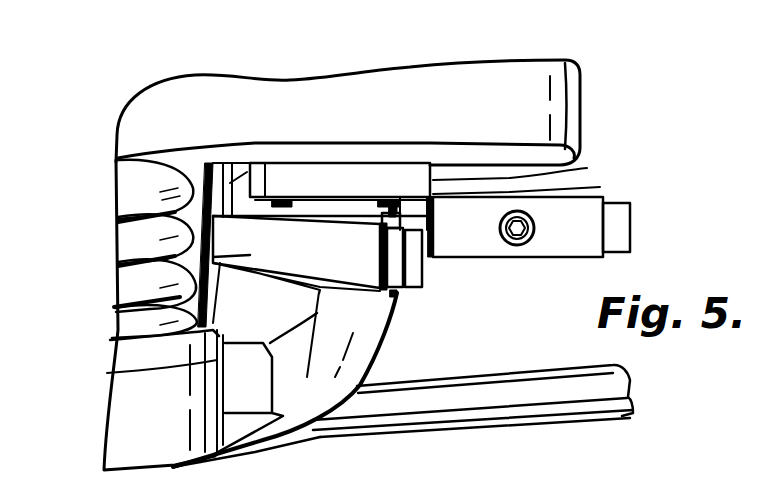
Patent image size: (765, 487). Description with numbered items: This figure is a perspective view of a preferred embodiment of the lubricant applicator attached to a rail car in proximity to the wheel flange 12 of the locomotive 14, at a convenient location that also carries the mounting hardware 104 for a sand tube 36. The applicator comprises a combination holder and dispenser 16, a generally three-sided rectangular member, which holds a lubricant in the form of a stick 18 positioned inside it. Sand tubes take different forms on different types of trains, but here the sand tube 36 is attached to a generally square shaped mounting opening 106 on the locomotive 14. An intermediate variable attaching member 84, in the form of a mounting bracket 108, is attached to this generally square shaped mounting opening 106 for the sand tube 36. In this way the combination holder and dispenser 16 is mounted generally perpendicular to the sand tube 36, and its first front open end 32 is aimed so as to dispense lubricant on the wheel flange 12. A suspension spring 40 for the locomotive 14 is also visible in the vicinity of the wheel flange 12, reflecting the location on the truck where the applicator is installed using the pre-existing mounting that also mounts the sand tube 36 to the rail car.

The wheel flange 12 is at (110, 328).
The locomotive 14 is at (103, 118).
The combination holder and dispenser 16 is at (110, 280).
The lubricant stick 18 is at (417, 270).
The first front open end 32 is at (220, 217).
The sand tube 36 is at (393, 320).
The suspension spring 40 is at (118, 233).
The intermediate variable attaching member 84 is at (348, 197).
The mounting hardware 104 is at (430, 156).
The generally square shaped mounting opening 106 is at (398, 162).
The mounting bracket 108 is at (600, 187).